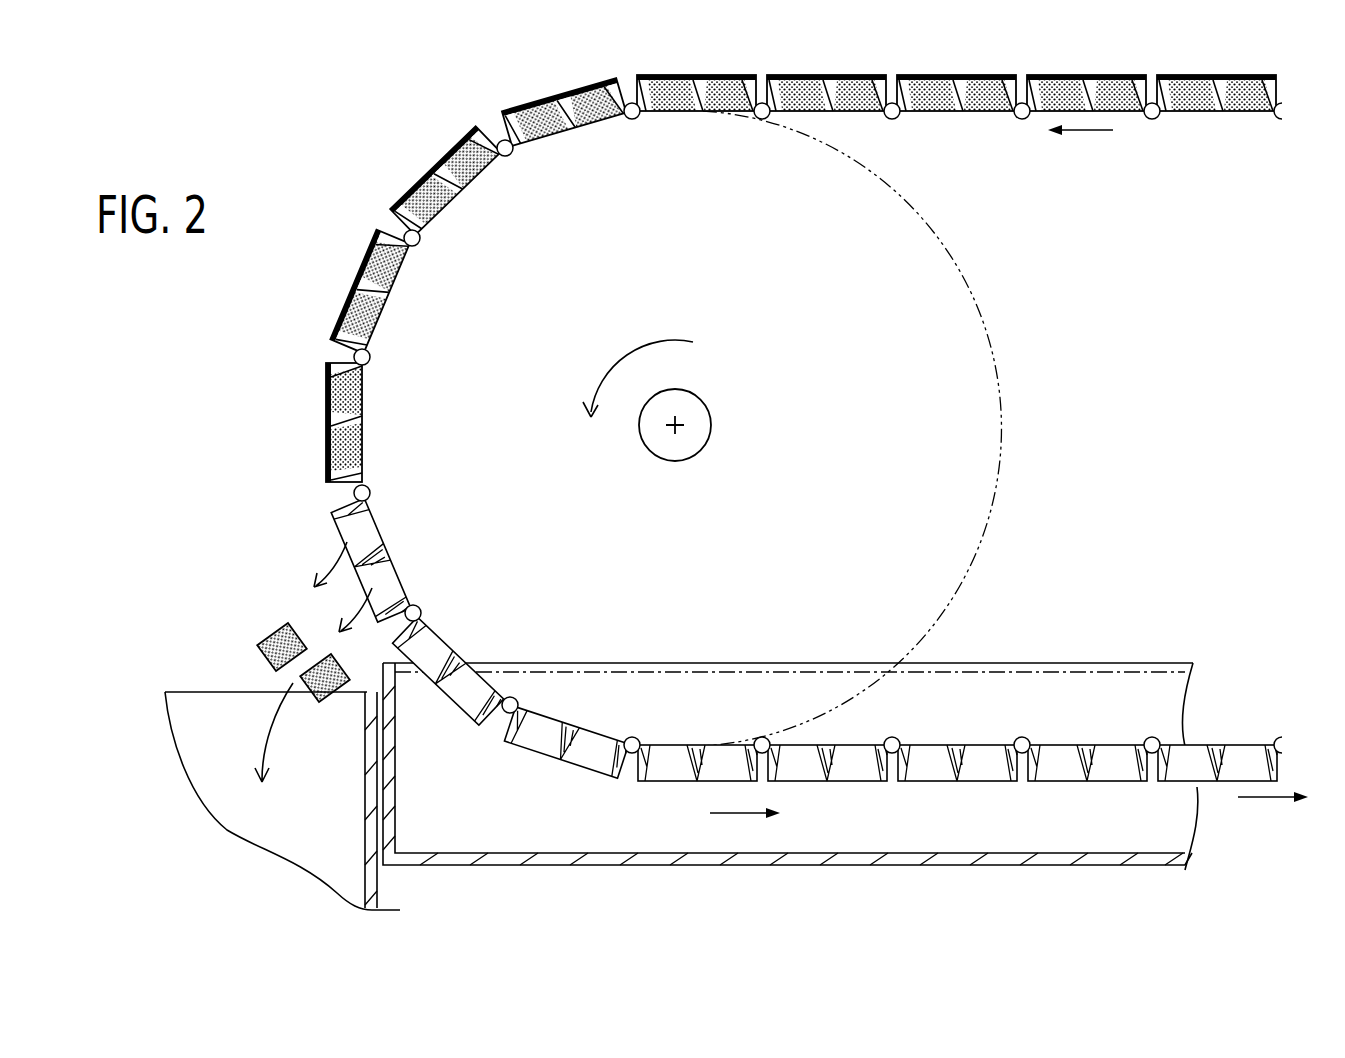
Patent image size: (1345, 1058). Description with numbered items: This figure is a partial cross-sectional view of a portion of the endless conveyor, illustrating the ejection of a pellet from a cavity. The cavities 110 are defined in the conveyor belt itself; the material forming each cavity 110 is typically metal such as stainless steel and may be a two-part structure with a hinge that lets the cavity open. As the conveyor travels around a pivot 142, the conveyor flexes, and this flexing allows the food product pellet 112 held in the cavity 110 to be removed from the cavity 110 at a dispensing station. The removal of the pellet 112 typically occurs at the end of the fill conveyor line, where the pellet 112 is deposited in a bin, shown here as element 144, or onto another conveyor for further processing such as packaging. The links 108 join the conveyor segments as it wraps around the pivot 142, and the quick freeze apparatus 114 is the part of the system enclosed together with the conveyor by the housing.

The chain links 108 is at (372, 356).
The cavity 110 is at (1005, 90).
The pellet 112 is at (1203, 90).
The quick freeze apparatus 114 is at (1097, 683).
The pivot 142 is at (700, 398).
The collection bin 144 is at (222, 705).